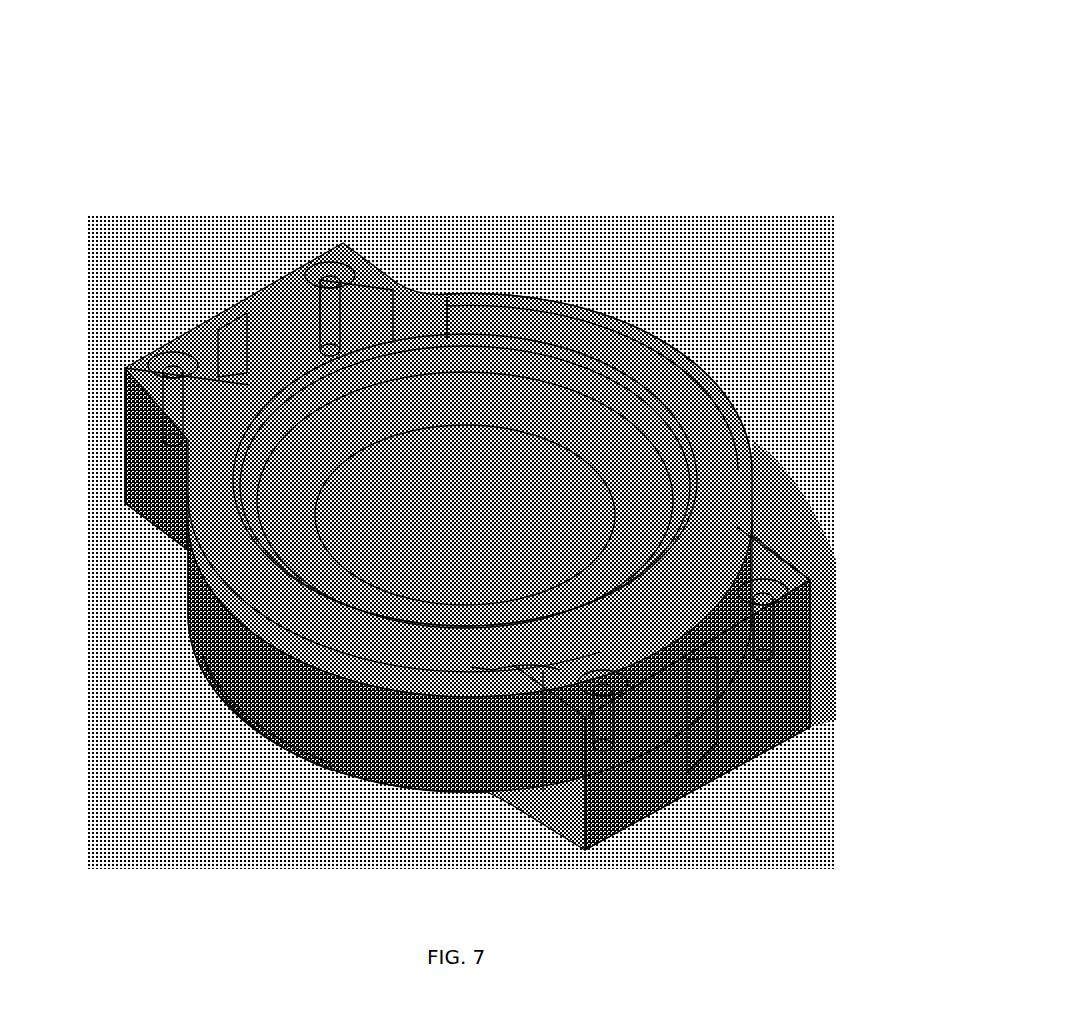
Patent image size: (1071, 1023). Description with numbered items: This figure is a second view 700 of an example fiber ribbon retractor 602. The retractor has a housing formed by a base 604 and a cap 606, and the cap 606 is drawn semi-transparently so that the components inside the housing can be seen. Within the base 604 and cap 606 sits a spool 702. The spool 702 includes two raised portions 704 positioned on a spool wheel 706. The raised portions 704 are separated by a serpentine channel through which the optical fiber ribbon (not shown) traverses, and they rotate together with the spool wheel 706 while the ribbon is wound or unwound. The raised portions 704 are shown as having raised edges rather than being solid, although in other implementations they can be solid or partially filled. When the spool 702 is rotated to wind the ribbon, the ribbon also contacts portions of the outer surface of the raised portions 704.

The second view 700 is at (435, 463).
The fiber ribbon retractor 602 is at (451, 503).
The cap 606 is at (497, 294).
The spool 702 is at (670, 388).
The raised portions 704 is at (395, 470).
The spool wheel 706 is at (240, 572).
The base 604 is at (330, 780).